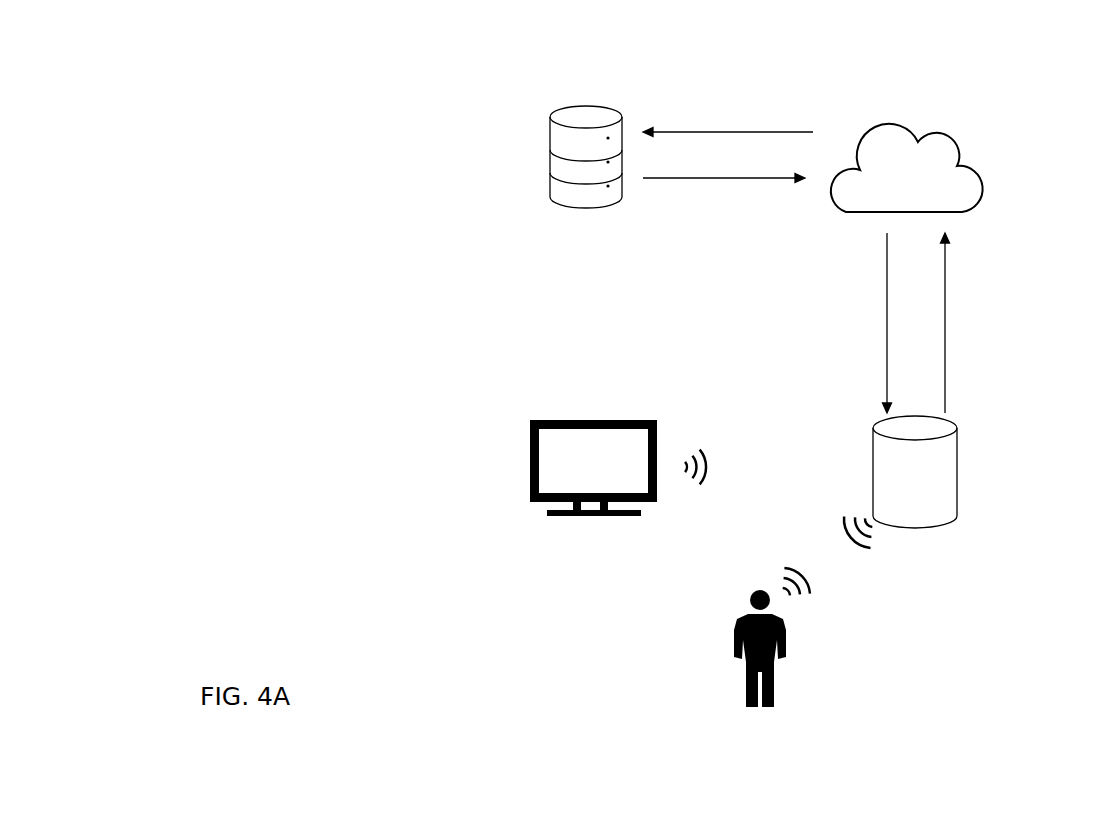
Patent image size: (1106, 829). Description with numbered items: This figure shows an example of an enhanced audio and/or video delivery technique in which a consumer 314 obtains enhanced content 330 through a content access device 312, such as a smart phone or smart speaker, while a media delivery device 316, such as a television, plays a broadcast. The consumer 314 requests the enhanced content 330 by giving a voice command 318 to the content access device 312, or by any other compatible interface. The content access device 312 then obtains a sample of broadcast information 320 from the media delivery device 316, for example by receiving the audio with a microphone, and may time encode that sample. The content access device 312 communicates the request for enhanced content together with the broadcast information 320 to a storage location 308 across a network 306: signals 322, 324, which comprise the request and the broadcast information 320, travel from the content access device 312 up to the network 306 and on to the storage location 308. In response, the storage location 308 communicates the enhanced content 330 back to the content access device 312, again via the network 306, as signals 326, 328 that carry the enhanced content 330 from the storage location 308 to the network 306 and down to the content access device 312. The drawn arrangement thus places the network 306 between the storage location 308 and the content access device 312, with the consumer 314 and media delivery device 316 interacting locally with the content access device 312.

The network 306 is at (963, 147).
The storage location 308 is at (525, 157).
The content access device 312 is at (965, 467).
The consumer 314 is at (725, 667).
The media delivery device 316 is at (527, 468).
The voice command 318 is at (808, 600).
The broadcast information 320 is at (698, 430).
The signal 322 is at (953, 307).
The signal 324 is at (713, 127).
The signal 326 is at (715, 187).
The signal 328 is at (883, 307).
The enhanced content 330 is at (843, 510).